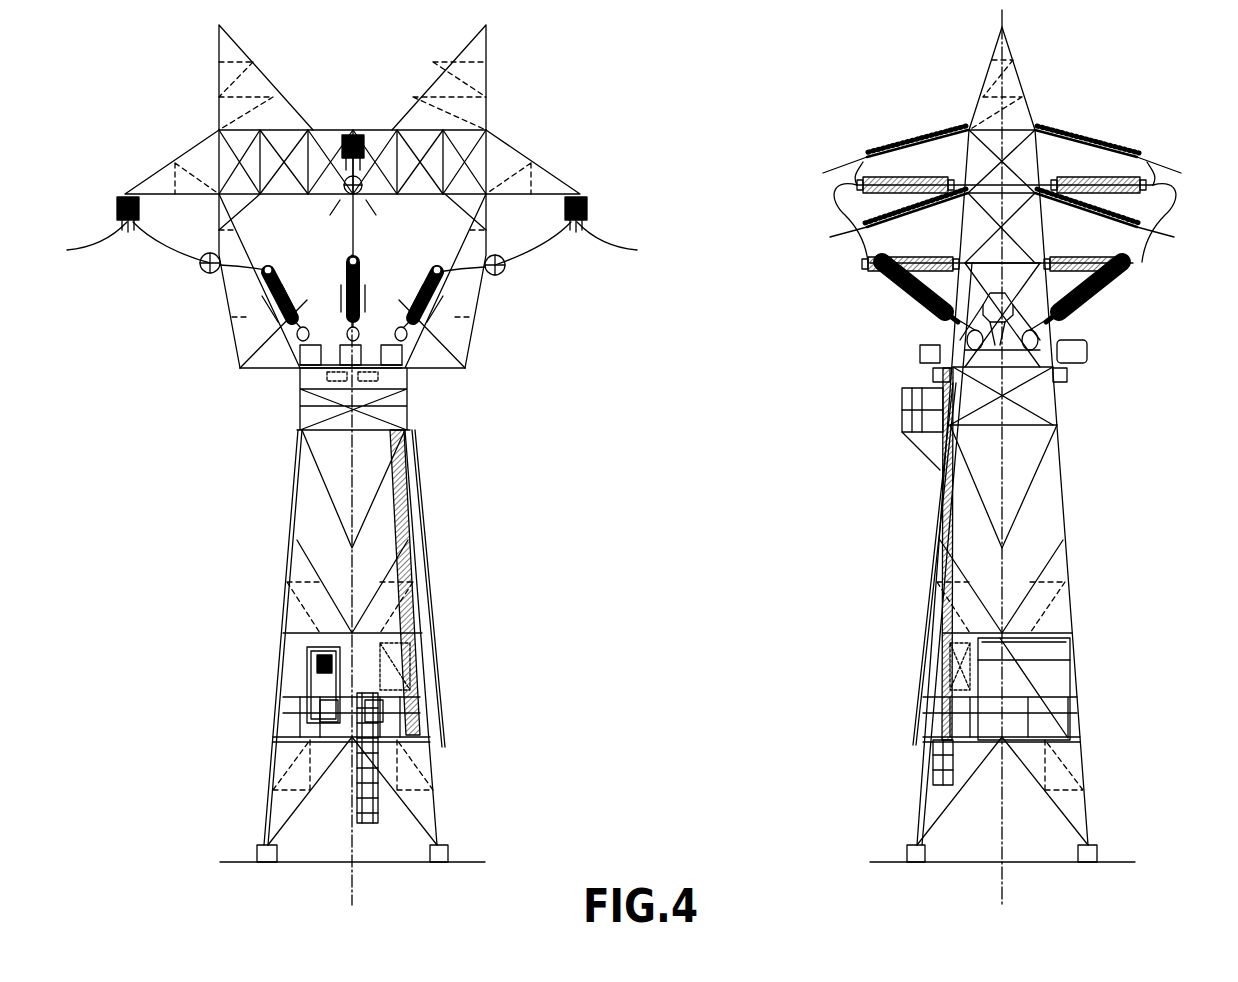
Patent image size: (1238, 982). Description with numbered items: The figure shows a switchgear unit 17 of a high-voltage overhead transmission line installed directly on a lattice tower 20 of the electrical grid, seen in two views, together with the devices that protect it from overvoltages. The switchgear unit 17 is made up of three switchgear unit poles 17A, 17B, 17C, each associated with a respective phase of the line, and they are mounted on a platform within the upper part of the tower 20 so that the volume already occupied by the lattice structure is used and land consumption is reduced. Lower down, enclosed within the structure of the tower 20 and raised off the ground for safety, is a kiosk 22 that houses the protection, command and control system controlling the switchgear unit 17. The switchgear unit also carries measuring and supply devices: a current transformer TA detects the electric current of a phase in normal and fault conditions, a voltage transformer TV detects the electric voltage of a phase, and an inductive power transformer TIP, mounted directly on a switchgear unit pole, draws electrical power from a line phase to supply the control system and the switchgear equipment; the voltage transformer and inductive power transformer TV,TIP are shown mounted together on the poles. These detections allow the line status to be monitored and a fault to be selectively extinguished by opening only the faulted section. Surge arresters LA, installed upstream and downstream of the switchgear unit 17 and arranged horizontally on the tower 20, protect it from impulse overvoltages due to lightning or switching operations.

The switchgear unit 17 is at (447, 258).
The switchgear unit pole 17A is at (443, 292).
The switchgear unit pole 17B is at (346, 335).
The switchgear unit pole 17C is at (275, 310).
The tower 20 is at (417, 560).
The kiosk 22 is at (363, 677).
The voltage transformer and inductive power transformer TV,TIP is at (402, 300).
The voltage transformer TV is at (1077, 357).
The inductive power transformer TIP is at (997, 333).
The current transformer TA is at (1070, 322).
The surge arrester LA is at (1080, 177).